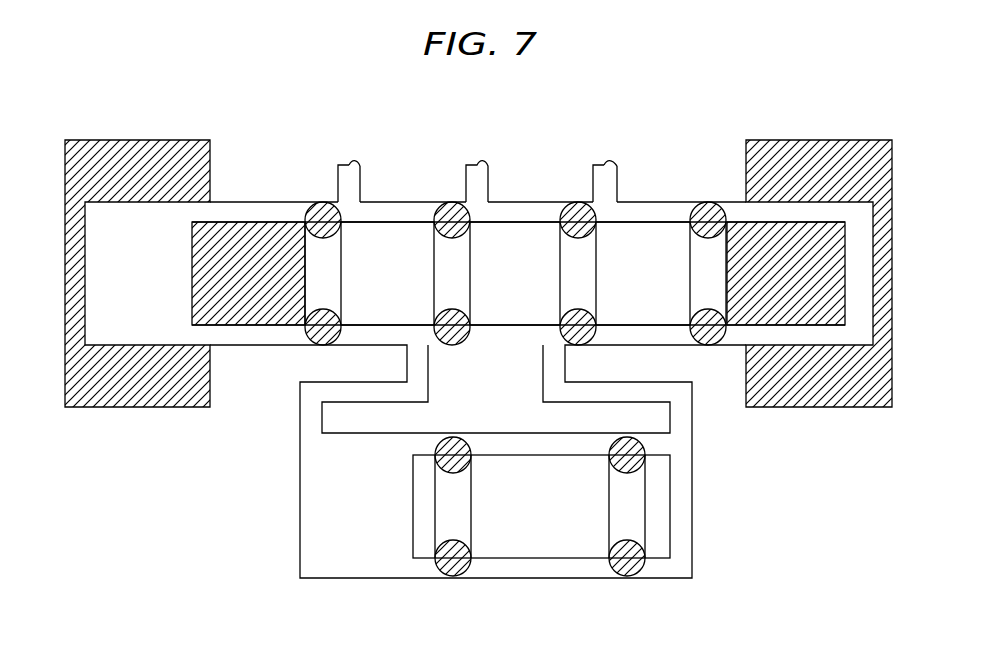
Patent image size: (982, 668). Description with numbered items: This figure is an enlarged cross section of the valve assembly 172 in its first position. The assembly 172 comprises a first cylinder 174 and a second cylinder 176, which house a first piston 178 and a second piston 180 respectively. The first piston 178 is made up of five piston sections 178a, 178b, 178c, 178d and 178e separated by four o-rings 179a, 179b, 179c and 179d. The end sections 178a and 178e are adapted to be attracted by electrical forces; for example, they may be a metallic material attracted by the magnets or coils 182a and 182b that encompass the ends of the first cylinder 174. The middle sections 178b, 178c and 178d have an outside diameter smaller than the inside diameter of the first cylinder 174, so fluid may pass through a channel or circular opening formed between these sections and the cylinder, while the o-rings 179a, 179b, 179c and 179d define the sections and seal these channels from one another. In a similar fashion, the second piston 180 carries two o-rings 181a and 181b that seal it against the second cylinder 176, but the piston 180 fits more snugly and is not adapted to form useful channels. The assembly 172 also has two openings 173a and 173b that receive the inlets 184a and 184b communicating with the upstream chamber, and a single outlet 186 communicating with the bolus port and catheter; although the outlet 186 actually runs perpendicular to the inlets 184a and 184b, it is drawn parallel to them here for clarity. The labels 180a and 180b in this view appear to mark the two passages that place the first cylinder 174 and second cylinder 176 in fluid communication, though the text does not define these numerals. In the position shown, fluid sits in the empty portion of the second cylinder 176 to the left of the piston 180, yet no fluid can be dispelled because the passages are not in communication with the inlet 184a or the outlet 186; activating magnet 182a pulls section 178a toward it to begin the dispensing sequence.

The valve assembly 172 is at (462, 333).
The opening 173a is at (630, 135).
The opening 173b is at (371, 141).
The first cylinder 174 is at (648, 200).
The second cylinder 176 is at (573, 580).
The first piston 178 is at (518, 217).
The piston section 178a is at (230, 232).
The piston section 178b is at (395, 228).
The piston section 178c is at (495, 245).
The piston section 178d is at (656, 233).
The piston section 178e is at (797, 235).
The o-ring 179a is at (318, 202).
The o-ring 179b is at (450, 200).
The o-ring 179c is at (582, 200).
The o-ring 179d is at (728, 200).
The second piston 180 is at (541, 542).
The chamber passage 180a is at (347, 390).
The chamber passage 180b is at (653, 390).
The o-ring 181a is at (457, 563).
The o-ring 181b is at (627, 562).
The magnet or coil 182a is at (82, 390).
The magnet or coil 182b is at (852, 383).
The inlet 184a is at (606, 165).
The inlet 184b is at (353, 175).
The outlet 186 is at (483, 178).